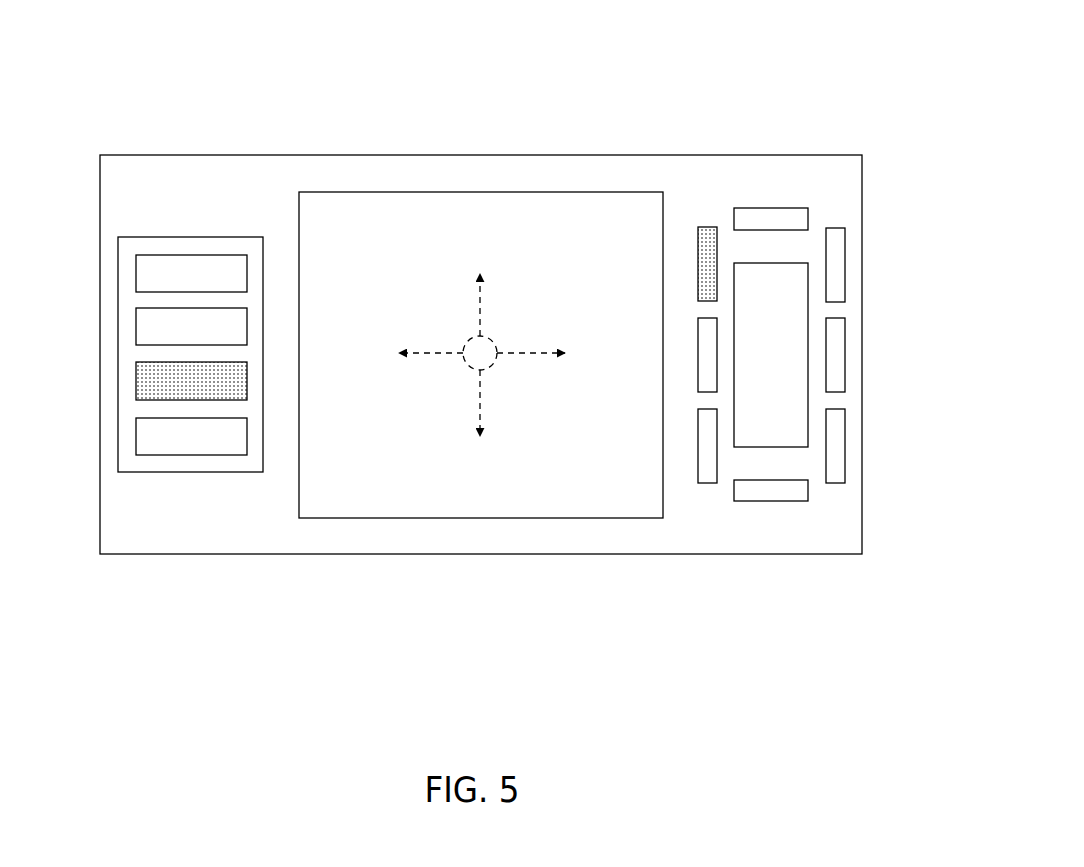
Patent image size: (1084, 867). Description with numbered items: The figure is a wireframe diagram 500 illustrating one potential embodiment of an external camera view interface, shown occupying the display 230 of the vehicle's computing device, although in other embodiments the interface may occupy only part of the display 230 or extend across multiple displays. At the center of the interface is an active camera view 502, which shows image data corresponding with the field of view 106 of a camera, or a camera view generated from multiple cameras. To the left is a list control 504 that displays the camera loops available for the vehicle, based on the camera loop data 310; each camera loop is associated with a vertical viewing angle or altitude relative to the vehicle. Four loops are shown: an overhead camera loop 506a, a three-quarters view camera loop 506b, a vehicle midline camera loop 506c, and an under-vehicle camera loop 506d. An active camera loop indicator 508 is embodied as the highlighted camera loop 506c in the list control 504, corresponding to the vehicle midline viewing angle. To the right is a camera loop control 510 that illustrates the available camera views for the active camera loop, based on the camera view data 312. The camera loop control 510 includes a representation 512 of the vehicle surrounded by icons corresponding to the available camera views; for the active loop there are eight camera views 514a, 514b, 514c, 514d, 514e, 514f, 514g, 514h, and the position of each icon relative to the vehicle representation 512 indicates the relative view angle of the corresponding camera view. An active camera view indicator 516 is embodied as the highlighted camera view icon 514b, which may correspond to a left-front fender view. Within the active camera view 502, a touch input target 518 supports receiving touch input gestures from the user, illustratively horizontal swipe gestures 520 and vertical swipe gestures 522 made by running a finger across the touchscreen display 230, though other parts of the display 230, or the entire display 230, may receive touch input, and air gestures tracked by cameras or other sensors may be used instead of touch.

The wireframe diagram 500 is at (897, 95).
The display 230 is at (213, 155).
The camera loop data 310 is at (165, 503).
The camera view data 312 is at (815, 518).
The active camera view 502 is at (315, 192).
The field of view 106 is at (390, 215).
The list control 504 is at (130, 249).
The overhead camera loop 506a is at (191, 273).
The three-quarters view camera loop 506b is at (191, 326).
The vehicle midline camera loop 506c is at (897, 183).
The under-vehicle camera loop 506d is at (191, 436).
The active camera loop indicator 508 is at (128, 383).
The camera loop control 510 is at (708, 118).
The representation of the vehicle 512 is at (795, 447).
The camera view icon 514a is at (780, 208).
The camera view icon 514b is at (708, 227).
The camera view icon 514c is at (698, 373).
The camera view icon 514d is at (710, 483).
The camera view icon 514e is at (784, 501).
The camera view icon 514f is at (845, 452).
The camera view icon 514g is at (845, 338).
The camera view icon 514h is at (845, 262).
The active camera view indicator 516 is at (688, 220).
The touch input target 518 is at (494, 365).
The horizontal swipe gestures 520 is at (430, 355).
The vertical swipe gestures 522 is at (480, 405).